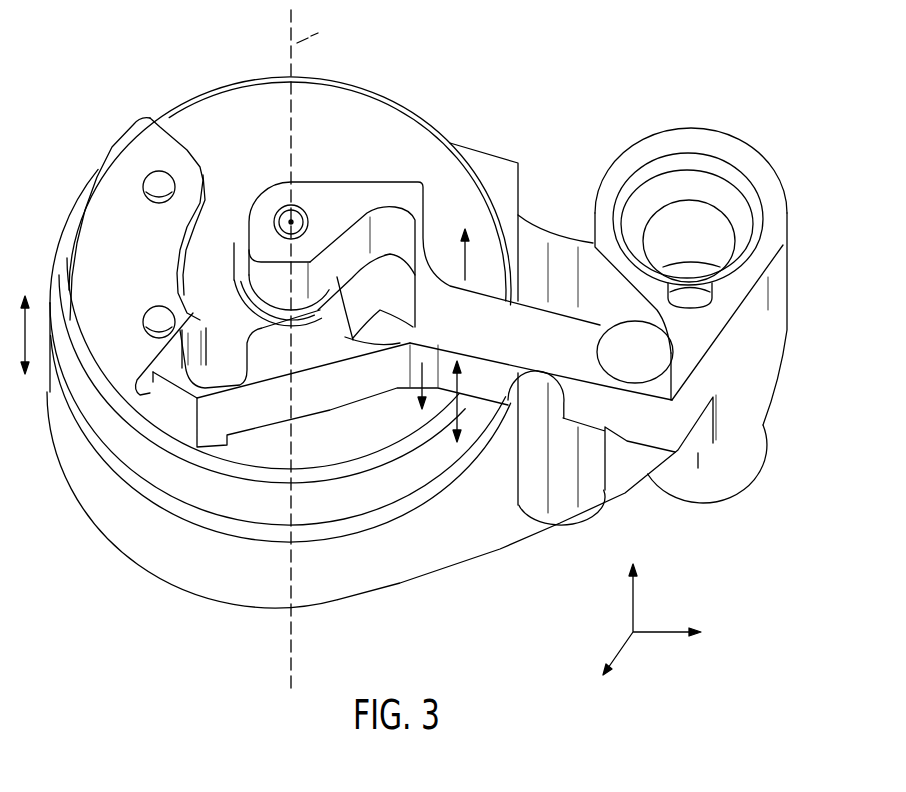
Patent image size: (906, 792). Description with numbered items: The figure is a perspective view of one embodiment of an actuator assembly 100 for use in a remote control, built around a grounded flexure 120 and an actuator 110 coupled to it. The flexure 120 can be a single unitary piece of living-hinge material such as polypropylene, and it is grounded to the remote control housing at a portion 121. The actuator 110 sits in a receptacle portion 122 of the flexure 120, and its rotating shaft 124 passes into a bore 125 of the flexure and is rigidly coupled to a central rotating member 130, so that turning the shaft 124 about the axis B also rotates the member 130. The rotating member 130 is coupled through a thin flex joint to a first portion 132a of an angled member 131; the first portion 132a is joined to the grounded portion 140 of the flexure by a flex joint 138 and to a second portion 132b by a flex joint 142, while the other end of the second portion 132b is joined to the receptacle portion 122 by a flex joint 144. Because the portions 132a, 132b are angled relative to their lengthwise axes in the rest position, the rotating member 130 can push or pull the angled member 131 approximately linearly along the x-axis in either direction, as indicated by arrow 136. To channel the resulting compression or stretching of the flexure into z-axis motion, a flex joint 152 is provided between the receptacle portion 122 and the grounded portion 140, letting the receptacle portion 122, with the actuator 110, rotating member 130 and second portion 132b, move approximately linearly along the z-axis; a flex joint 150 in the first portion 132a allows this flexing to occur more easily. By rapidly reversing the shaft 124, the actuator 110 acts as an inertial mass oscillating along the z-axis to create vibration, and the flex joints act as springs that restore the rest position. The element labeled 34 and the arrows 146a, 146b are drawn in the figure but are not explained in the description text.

The assembly 100 is at (570, 90).
The disk 110 is at (330, 112).
The base body 120 is at (490, 280).
The knob 121 is at (718, 514).
The flange 122 is at (178, 578).
The pivot pin 124 is at (287, 217).
The pivot boss 125 is at (305, 207).
The lever arm 130 is at (377, 190).
The detent bump 131 is at (379, 312).
The upper contact surface 132a is at (508, 325).
The lower contact surface 132b is at (333, 352).
The upright lug 34 is at (433, 209).
The movement direction 136 is at (459, 420).
The follower pad 138 is at (637, 354).
The ring boss 140 is at (750, 385).
The bracket plate 142 is at (333, 370).
The tab 144 is at (212, 385).
The detent direction a 146a is at (420, 378).
The detent direction b 146b is at (467, 260).
The slot 150 is at (543, 355).
The cylindrical boss 152 is at (569, 505).